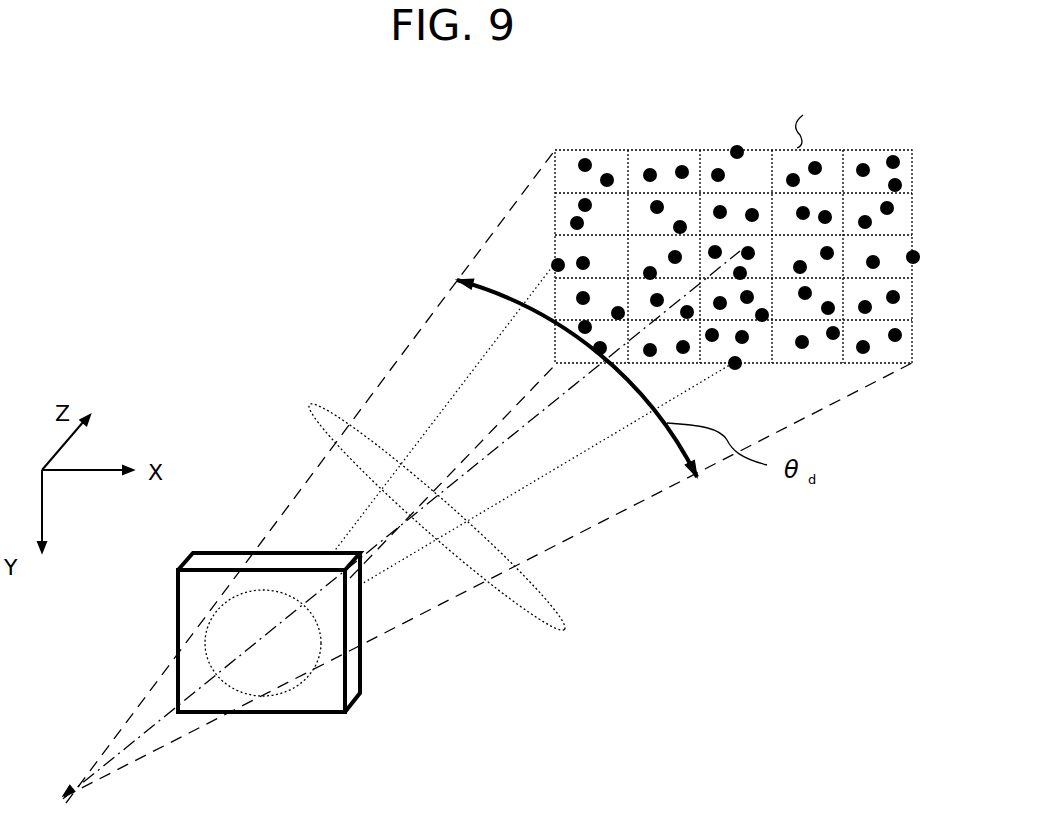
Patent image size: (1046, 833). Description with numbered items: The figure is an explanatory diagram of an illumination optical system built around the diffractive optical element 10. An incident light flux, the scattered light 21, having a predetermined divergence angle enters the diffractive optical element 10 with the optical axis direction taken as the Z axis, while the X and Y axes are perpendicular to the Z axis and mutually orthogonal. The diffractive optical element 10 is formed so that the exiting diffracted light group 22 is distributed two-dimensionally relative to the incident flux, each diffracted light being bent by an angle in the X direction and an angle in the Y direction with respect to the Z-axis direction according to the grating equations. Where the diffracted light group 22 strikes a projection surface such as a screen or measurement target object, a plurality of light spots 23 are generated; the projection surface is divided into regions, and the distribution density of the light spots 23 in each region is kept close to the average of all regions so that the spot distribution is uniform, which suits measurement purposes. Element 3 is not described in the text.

The optical axis 3 is at (153, 723).
The diffractive optical element 10 is at (363, 682).
The scattered light 21 is at (123, 768).
The diffracted light group 22 is at (318, 418).
The light spots 23 is at (583, 161).